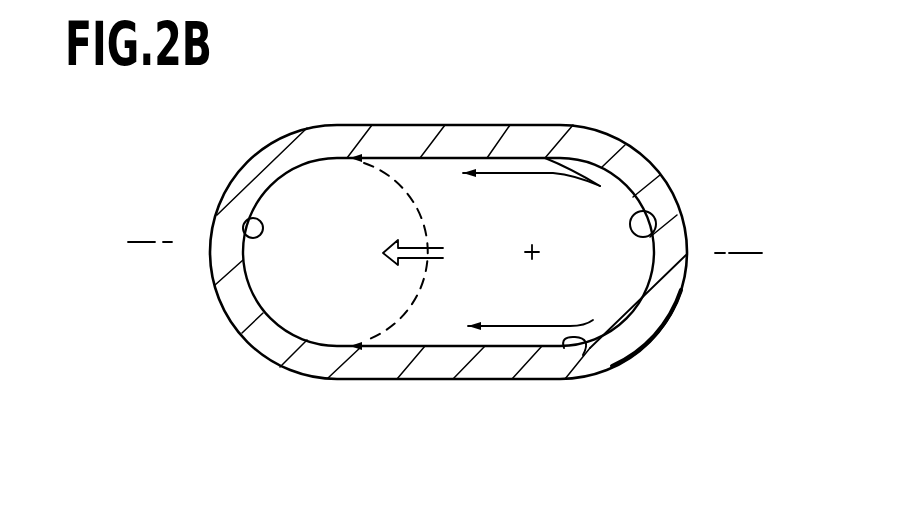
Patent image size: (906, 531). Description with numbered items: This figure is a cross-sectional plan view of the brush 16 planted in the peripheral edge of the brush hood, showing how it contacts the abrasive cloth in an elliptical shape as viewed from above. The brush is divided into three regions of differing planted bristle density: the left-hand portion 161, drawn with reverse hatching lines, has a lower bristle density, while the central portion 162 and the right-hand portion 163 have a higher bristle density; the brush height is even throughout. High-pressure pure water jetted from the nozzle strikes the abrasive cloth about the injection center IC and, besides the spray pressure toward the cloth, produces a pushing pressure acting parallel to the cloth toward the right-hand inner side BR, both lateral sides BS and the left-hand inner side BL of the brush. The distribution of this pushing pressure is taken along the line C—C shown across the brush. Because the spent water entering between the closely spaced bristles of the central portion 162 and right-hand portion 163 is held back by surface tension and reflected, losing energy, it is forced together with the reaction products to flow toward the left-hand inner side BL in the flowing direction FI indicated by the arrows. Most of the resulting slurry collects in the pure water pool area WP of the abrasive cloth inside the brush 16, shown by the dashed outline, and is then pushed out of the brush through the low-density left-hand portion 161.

The brush 16 is at (775, 180).
The brush left-hand portion 161 is at (218, 305).
The brush central portion 162 is at (413, 380).
The brush right-hand portion 163 is at (678, 306).
The left-hand inner side BL is at (248, 220).
The right-hand inner side BR is at (656, 216).
The lateral sides BS is at (553, 173).
The line C— C is at (444, 247).
The flowing direction FI is at (491, 249).
The pure water pool area WP is at (371, 252).
The high-pressure pure water injection center IC is at (535, 271).